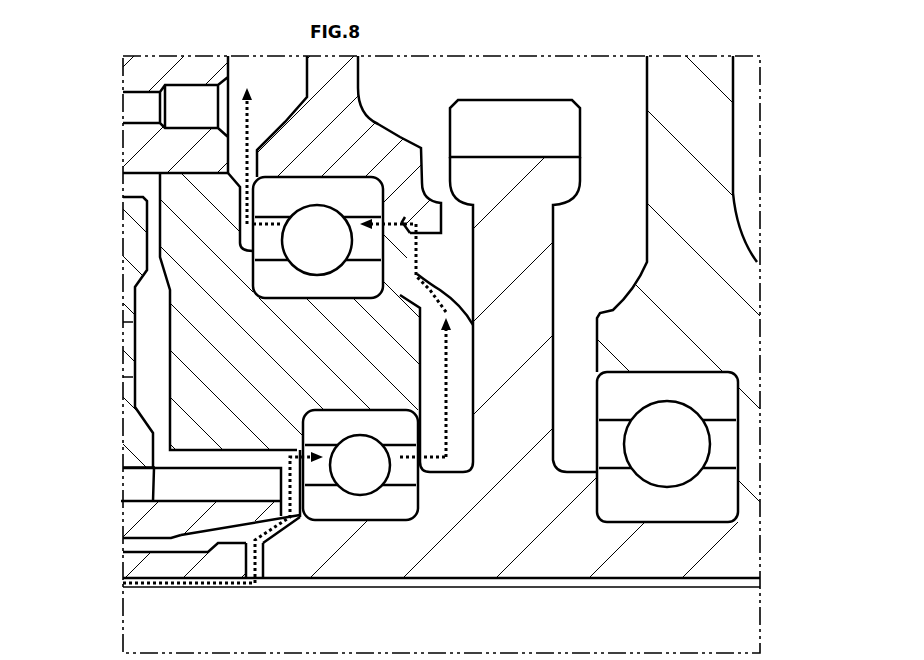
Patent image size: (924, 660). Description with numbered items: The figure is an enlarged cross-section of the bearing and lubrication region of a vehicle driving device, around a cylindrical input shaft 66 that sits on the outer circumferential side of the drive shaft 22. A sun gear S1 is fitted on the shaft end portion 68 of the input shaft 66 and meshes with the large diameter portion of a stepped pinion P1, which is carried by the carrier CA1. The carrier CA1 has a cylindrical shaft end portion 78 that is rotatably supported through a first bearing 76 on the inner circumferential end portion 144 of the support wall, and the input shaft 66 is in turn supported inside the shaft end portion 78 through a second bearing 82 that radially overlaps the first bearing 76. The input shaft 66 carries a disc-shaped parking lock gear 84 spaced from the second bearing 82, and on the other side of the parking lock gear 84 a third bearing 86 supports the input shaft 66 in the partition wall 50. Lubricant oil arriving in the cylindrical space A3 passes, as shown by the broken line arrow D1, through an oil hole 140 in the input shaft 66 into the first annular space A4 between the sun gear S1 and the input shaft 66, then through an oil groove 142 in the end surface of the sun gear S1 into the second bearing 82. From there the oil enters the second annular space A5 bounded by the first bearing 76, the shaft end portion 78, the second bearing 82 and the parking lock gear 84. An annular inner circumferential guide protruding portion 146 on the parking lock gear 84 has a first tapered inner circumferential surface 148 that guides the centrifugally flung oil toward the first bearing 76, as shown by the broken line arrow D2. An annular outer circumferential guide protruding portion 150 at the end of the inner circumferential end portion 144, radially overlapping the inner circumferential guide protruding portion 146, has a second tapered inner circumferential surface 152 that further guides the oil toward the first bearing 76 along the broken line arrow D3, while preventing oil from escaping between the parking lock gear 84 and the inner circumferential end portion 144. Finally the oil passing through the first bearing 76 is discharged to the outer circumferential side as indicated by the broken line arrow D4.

The drive shaft 22 is at (745, 637).
The partition wall 50 is at (725, 143).
The input shaft 66 is at (745, 557).
The shaft end portion 68 is at (180, 568).
The first bearing 76 is at (313, 240).
The shaft end portion 78 is at (402, 360).
The second bearing 82 is at (363, 465).
The parking lock gear 84 is at (538, 108).
The third bearing 86 is at (667, 447).
The oil hole 140 is at (252, 587).
The oil groove 142 is at (300, 522).
The inner circumferential end portion 144 is at (377, 125).
The inner circumferential guide protruding portion 146 is at (410, 278).
The first tapered inner circumferential surface 148 is at (435, 302).
The outer circumferential guide protruding portion 150 is at (430, 220).
The second tapered inner circumferential surface 152 is at (403, 215).
The carrier CA1 is at (133, 156).
The stepped pinion P1 is at (133, 447).
The sun gear S1 is at (125, 525).
The cylindrical space A3 is at (385, 583).
The first annular space A4 is at (233, 533).
The second annular space A5 is at (460, 421).
The broken line arrow D1 is at (290, 460).
The broken line arrow D2 is at (447, 375).
The broken line arrow D3 is at (373, 213).
The broken line arrow D4 is at (250, 116).